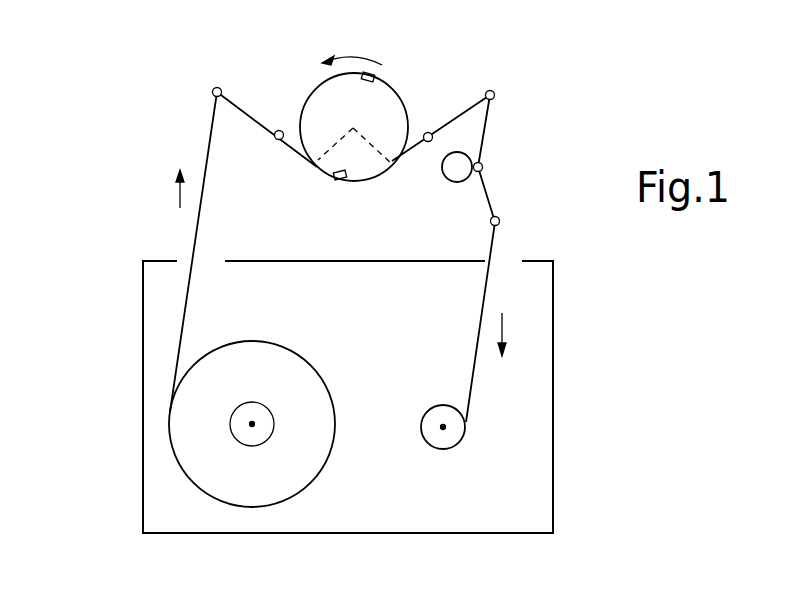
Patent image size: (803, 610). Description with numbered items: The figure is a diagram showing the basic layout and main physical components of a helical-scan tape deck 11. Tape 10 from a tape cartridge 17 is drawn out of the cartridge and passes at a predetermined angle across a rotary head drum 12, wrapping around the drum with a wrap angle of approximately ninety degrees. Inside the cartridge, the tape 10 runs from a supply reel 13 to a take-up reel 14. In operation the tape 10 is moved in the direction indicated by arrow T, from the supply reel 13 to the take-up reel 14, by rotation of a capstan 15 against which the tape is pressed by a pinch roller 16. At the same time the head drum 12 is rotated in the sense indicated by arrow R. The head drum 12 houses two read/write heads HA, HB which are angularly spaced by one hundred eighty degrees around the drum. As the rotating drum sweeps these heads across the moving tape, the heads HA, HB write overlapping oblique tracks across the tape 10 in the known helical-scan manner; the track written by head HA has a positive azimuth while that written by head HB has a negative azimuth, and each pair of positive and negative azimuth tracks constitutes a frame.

The tape 10 is at (203, 143).
The helical-scan tape deck 11 is at (114, 243).
The rotary head drum 12 is at (310, 92).
The supply reel 13 is at (330, 453).
The take-up reel 14 is at (443, 449).
The capstan 15 is at (483, 167).
The pinch roller 16 is at (441, 173).
The tape cartridge 17 is at (142, 395).
The read/write head HA is at (340, 180).
The read/write head HB is at (376, 74).
The arrow indicating head drum rotation R is at (352, 46).
The arrow indicating tape direction T is at (166, 191).